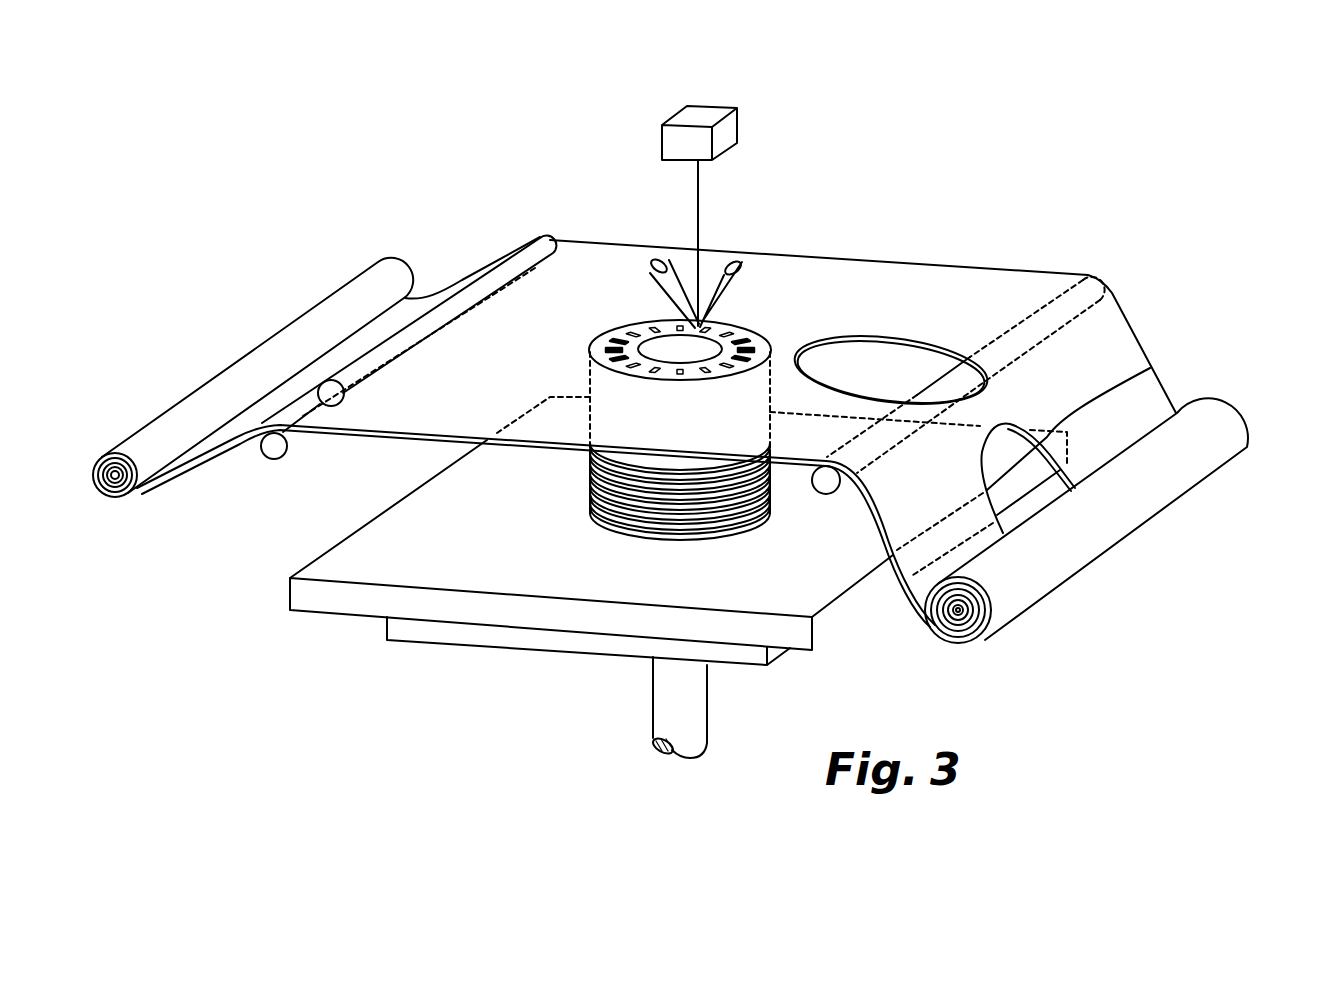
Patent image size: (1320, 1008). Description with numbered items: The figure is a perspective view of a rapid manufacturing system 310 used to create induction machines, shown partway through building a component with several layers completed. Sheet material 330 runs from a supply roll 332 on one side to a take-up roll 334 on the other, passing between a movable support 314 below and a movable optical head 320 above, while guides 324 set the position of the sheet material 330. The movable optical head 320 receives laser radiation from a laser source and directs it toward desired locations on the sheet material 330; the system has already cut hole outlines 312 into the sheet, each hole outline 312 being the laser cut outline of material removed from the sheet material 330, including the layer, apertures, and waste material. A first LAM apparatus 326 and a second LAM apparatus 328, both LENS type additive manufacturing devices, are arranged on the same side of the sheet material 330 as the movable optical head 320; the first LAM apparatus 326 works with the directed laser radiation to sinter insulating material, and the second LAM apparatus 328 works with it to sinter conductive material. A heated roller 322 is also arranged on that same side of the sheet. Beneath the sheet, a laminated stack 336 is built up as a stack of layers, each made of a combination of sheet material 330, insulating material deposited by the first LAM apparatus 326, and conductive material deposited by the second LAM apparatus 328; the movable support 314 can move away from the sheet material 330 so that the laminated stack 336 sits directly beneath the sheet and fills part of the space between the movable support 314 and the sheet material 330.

The rapid manufacturing system 310 is at (1160, 230).
The hole outlines 312 is at (928, 340).
The movable support 314 is at (462, 628).
The movable optical head 320 is at (702, 108).
The heated roller 322 is at (500, 273).
The guides 324 is at (267, 447).
The first LAM apparatus 326 is at (660, 263).
The second LAM apparatus 328 is at (742, 261).
The sheet material 330 is at (838, 316).
The supply roll 332 is at (195, 400).
The take-up roll 334 is at (1153, 497).
The laminated stack 336 is at (590, 483).